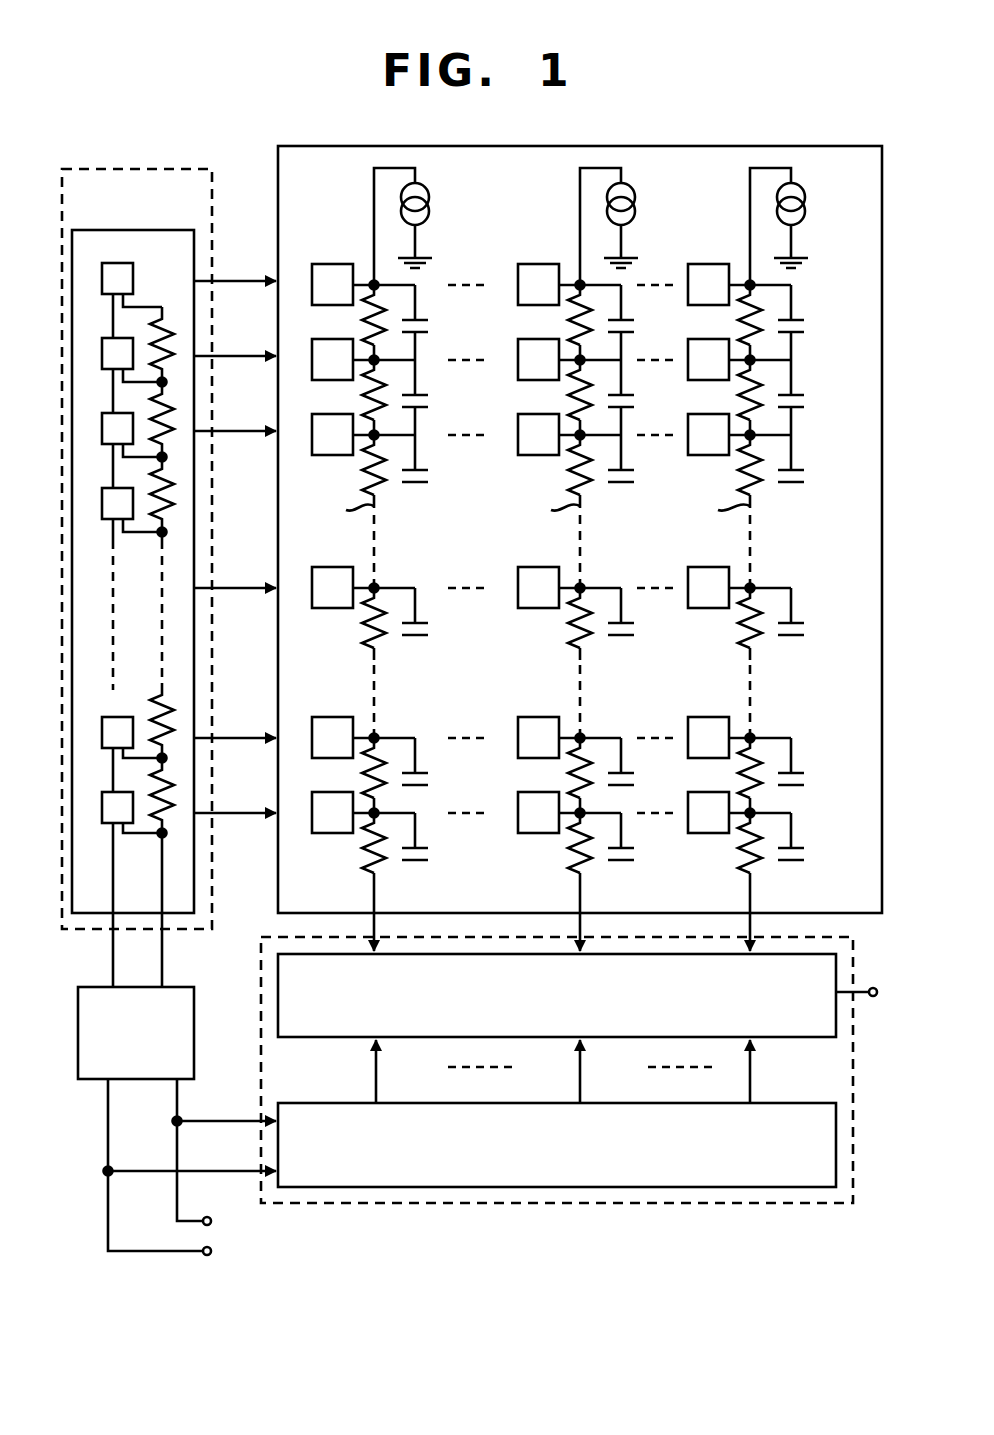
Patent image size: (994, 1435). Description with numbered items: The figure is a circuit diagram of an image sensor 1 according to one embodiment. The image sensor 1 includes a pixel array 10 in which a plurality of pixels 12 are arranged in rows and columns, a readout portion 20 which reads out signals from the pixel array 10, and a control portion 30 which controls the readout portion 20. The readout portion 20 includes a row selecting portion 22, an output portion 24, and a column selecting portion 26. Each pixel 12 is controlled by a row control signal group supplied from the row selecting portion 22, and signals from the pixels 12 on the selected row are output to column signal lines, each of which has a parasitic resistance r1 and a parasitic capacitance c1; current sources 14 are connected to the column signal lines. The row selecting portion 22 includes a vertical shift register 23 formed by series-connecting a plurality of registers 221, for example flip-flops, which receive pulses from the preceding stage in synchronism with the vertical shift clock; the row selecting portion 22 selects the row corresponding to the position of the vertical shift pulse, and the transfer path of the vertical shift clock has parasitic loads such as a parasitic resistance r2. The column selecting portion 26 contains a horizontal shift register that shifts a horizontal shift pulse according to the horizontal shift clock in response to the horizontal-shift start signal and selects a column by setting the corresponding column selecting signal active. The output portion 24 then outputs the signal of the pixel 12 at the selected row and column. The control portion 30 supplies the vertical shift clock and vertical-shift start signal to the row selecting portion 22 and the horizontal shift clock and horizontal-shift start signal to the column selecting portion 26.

The image sensor 1 is at (540, 1245).
The pixel array 10 is at (278, 150).
The pixel 12 is at (334, 263).
The current source 14 is at (440, 208).
The readout portion 20 is at (212, 210).
The row selecting portion 22 is at (138, 230).
The vertical shift register 23 is at (110, 261).
The register 221 is at (133, 283).
The output portion 24 is at (557, 995).
The column selecting portion 26 is at (196, 512).
The control portion 30 is at (194, 1040).
The parasitic resistance r1 is at (360, 322).
The parasitic capacitance c1 is at (430, 323).
The parasitic resistance r2 is at (162, 317).